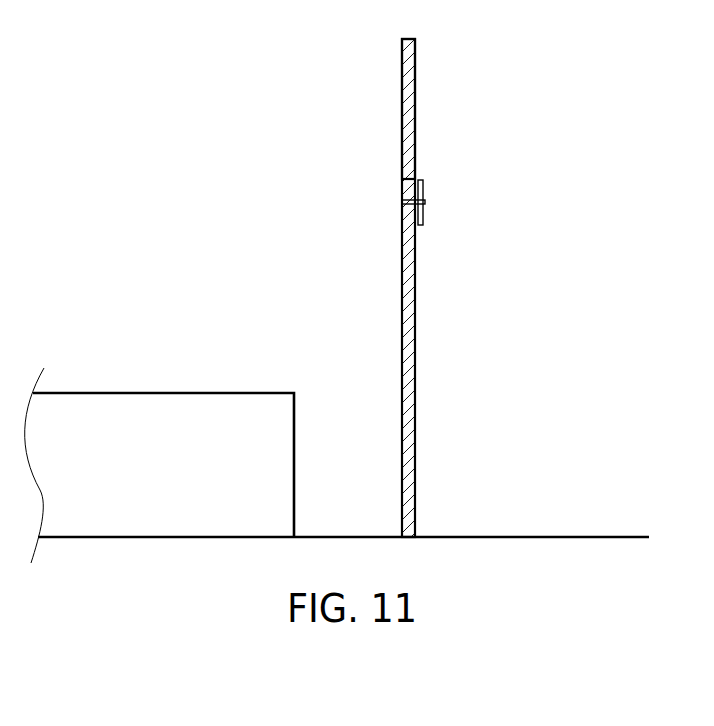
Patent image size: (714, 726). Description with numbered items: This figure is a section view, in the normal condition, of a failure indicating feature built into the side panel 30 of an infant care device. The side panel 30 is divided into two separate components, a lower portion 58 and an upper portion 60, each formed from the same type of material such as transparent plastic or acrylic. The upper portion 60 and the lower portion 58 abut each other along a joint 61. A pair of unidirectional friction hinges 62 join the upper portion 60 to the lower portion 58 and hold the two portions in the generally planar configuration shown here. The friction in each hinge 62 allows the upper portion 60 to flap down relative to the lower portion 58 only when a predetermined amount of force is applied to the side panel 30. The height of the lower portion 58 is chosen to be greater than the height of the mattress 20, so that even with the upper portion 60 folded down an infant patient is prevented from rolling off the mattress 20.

The mattress 20 is at (128, 408).
The side panel 30 is at (435, 137).
The lower portion 58 is at (415, 413).
The upper portion 60 is at (402, 111).
The joint 61 is at (402, 202).
The unidirectional friction hinge 62 is at (423, 216).